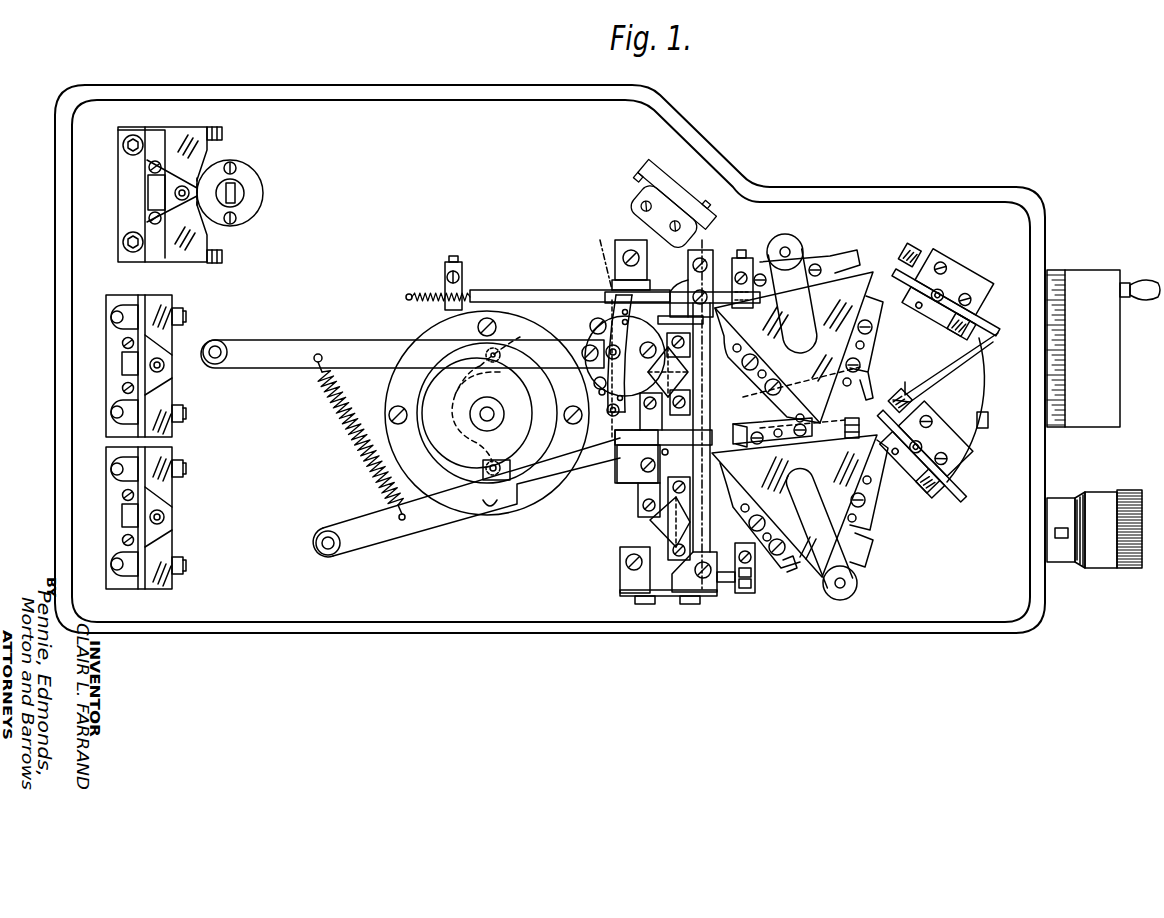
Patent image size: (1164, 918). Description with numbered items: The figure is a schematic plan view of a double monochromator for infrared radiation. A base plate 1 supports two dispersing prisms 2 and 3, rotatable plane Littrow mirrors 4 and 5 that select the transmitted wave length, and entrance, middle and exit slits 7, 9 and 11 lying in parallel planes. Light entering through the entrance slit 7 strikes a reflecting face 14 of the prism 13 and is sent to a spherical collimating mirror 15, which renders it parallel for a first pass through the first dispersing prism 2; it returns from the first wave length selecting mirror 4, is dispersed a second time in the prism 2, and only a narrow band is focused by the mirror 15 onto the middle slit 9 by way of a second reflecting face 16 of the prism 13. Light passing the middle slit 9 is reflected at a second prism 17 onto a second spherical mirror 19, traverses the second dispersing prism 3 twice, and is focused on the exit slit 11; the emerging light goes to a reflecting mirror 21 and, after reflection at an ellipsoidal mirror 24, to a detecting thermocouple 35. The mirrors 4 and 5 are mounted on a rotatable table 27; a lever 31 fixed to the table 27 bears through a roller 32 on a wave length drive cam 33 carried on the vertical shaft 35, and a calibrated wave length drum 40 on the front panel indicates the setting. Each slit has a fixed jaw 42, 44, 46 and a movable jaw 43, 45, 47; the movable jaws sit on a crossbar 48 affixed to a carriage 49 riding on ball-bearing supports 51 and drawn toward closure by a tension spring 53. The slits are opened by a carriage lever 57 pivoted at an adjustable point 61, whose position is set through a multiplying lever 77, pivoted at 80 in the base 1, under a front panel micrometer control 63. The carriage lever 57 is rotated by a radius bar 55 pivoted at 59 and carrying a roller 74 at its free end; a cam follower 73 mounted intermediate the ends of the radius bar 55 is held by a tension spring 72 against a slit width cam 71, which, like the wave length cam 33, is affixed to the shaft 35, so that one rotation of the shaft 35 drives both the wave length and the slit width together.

The base plate 1 is at (460, 83).
The first dispersing prism 2 is at (850, 480).
The second dispersing prism 3 is at (882, 278).
The first wave length selecting mirror 4 is at (942, 488).
The second wave length selecting mirror 5 is at (900, 252).
The entrance slit 7 is at (665, 598).
The middle slit 9 is at (667, 455).
The exit slit 11 is at (662, 290).
The prism 13 is at (670, 527).
The reflecting face 14 is at (657, 533).
The spherical collimating mirror 15 is at (192, 542).
The second reflecting face 16 is at (640, 515).
The second prism 17 is at (672, 380).
The second spherical mirror 19 is at (178, 300).
The reflecting mirror 21 is at (636, 188).
The ellipsoidal mirror 24 is at (207, 153).
The table 27 is at (975, 362).
The lever 31 is at (592, 462).
The roller 32 is at (485, 471).
The wave length drive cam 33 is at (538, 404).
The vertical shaft 35 is at (243, 187).
The calibrated wave length drum 40 is at (1104, 430).
The fixed jaw of entrance slit 42 is at (630, 598).
The movable jaw of entrance slit 43 is at (690, 604).
The fixed jaw of middle slit 44 is at (660, 450).
The movable jaw of middle slit 45 is at (678, 455).
The fixed jaw of exit slit 46 is at (648, 290).
The movable jaw of exit slit 47 is at (690, 262).
The crossbar 48 is at (713, 393).
The carriage 49 is at (549, 288).
The ball-bearing supports 51 is at (463, 286).
The tension spring 53 is at (500, 292).
The radius bar 55 is at (352, 345).
The carriage lever 57 is at (648, 352).
The pivot of radius bar 59 is at (218, 346).
The pivot of carriage lever 61 is at (612, 422).
The front panel micrometer control 63 is at (1095, 566).
The slit width cam 71 is at (433, 441).
The tension spring 72 is at (362, 460).
The cam follower 73 is at (497, 350).
The roller 74 is at (612, 312).
The multiplying lever 77 is at (602, 394).
The pivot of multiplying lever 80 is at (594, 348).